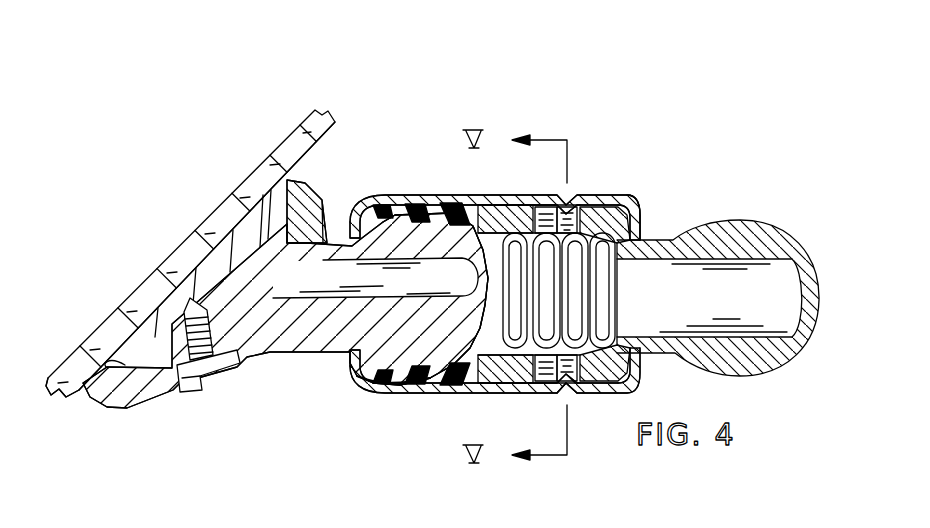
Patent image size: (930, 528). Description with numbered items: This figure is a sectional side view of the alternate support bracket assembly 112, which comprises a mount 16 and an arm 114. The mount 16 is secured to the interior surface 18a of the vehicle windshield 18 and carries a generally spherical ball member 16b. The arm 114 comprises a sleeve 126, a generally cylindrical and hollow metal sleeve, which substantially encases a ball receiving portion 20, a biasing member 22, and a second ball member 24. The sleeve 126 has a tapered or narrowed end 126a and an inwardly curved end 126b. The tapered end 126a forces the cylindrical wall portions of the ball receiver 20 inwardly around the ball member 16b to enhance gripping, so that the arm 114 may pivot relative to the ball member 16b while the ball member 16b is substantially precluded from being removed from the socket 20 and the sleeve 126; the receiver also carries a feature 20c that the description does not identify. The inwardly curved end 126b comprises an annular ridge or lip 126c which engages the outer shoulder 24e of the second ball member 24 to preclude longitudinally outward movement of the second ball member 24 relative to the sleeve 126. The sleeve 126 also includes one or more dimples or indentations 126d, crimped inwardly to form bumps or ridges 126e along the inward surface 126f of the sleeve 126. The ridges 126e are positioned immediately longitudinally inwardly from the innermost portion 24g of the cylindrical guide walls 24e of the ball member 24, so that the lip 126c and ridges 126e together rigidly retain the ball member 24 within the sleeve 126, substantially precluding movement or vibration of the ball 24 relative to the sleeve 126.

The support bracket assembly 112 is at (305, 53).
The vehicle windshield 18 is at (293, 133).
The interior surface 18a is at (67, 396).
The mount 16 is at (262, 368).
The ball member 16b is at (335, 357).
The ball receiving portion 20 is at (480, 380).
The ball surface 20c is at (400, 388).
The biasing member 22 is at (590, 235).
The second ball member 24 is at (747, 228).
The outer shoulder 24e is at (623, 213).
The innermost portion 24g is at (593, 392).
The arm 114 is at (622, 186).
The sleeve 126 is at (425, 195).
The tapered end 126a is at (360, 207).
The inwardly curved end 126b is at (627, 380).
The annular lip 126c is at (640, 227).
The dimples 126d is at (592, 228).
The ridges 126e is at (546, 394).
The inward surface 126f is at (512, 196).